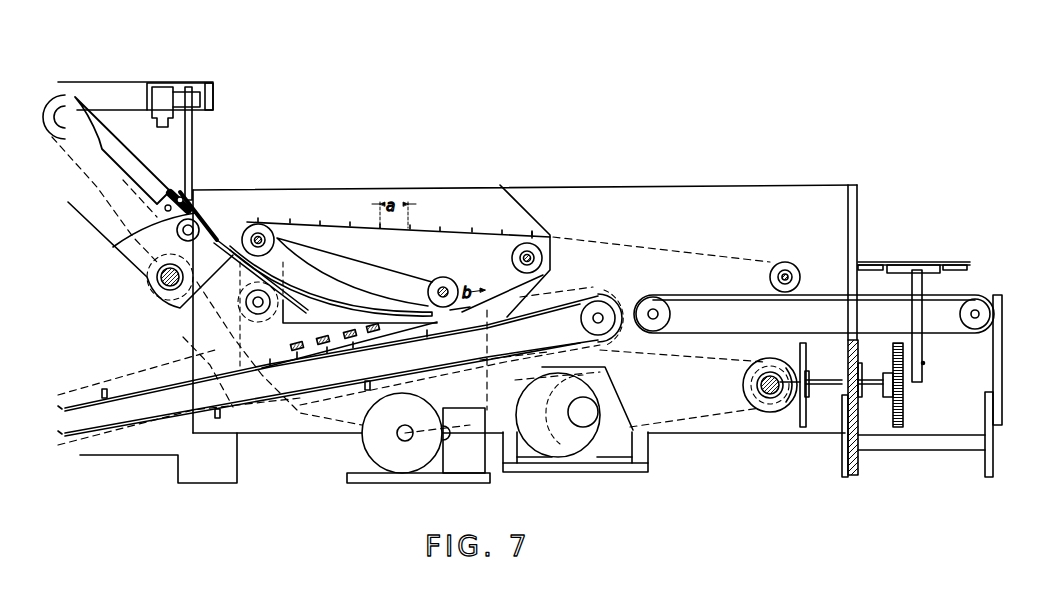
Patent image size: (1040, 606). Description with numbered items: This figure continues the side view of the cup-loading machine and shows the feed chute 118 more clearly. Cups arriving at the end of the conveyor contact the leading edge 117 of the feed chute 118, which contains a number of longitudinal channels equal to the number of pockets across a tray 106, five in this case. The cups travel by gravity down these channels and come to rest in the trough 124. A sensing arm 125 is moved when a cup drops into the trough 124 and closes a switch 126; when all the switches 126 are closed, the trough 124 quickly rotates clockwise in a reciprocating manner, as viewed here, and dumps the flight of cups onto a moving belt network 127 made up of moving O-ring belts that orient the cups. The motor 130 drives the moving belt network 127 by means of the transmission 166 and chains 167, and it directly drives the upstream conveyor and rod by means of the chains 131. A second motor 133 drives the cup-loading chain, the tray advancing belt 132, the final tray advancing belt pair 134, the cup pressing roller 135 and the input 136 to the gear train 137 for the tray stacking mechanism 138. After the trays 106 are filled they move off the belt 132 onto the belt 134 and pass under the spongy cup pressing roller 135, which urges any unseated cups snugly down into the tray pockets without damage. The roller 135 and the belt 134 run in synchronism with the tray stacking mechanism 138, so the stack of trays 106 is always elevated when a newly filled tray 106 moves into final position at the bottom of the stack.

The tray 106 is at (948, 262).
The leading edge 117 is at (90, 102).
The feed chute 118 is at (131, 160).
The trough 124 is at (137, 247).
The sensing arm 125 is at (193, 160).
The switch 126 is at (175, 98).
The moving belt network 127 is at (240, 318).
The motor 130 is at (385, 447).
The chains 131 is at (330, 412).
The tray advancing belt 132 is at (125, 437).
The motor 133 is at (568, 438).
The final tray advancing belt pair 134 is at (746, 299).
The cup pressing roller 135 is at (800, 264).
The input 136 is at (740, 385).
The gear train 137 is at (787, 410).
The tray stacking mechanism 138 is at (934, 290).
The transmission 166 is at (468, 457).
The chains 167 is at (278, 378).